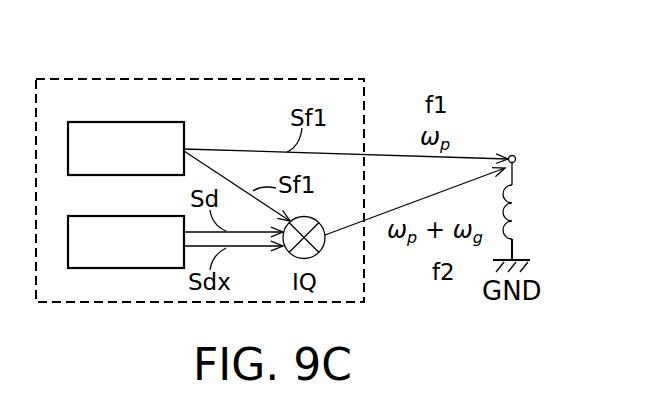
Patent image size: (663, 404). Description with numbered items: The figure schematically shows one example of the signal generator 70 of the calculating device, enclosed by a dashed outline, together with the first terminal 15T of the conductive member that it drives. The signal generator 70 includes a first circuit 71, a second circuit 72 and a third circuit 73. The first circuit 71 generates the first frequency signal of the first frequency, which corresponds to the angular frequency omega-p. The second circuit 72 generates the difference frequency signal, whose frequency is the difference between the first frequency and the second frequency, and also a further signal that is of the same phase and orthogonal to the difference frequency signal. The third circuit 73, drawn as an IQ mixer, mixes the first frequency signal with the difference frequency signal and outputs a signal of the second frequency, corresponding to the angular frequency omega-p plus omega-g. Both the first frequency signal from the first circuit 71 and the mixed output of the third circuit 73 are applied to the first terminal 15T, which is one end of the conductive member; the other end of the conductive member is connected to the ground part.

The signal generator 70 is at (308, 79).
The first circuit 71 is at (101, 122).
The second circuit 72 is at (101, 216).
The third circuit 73 is at (313, 218).
The first terminal 15T is at (516, 157).